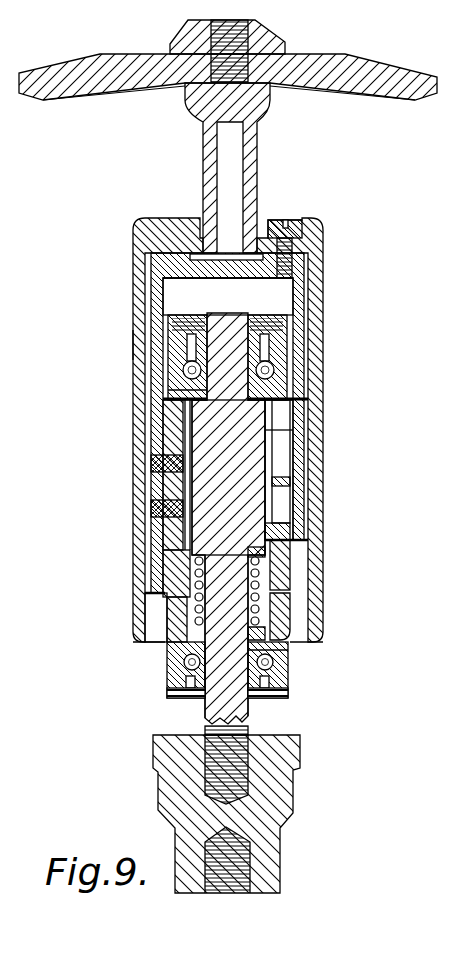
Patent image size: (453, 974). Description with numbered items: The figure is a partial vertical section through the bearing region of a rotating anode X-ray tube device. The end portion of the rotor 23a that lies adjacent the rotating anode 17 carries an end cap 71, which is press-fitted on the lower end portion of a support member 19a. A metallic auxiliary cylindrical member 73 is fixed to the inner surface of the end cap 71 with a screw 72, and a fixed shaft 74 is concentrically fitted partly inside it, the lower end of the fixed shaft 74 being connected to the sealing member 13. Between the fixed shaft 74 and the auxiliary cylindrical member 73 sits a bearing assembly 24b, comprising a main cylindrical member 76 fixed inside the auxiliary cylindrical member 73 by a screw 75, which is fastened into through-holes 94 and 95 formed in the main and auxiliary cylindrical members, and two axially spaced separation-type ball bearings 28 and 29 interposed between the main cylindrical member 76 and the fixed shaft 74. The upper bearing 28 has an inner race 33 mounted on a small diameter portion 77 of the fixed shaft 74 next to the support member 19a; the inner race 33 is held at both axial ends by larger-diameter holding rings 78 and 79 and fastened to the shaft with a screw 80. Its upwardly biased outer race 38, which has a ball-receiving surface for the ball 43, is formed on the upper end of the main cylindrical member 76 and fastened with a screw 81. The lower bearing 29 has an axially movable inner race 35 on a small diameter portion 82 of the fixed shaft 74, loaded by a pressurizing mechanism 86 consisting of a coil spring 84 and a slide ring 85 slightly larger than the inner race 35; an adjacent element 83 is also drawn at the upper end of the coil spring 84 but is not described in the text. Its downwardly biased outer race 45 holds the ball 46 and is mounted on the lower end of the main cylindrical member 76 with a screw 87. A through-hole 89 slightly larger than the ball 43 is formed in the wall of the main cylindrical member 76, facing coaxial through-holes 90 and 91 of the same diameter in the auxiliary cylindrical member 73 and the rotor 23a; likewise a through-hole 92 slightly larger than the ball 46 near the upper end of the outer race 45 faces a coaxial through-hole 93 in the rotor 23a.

The rotating anode 17 is at (346, 55).
The support member 19a is at (258, 160).
The end cap 71 is at (163, 227).
The screw 72 is at (292, 226).
The auxiliary cylindrical member 73 is at (293, 291).
The bearing assembly 24b is at (184, 307).
The screw 80 is at (207, 317).
The small diameter portion 77 is at (236, 330).
The fixed shaft 74 is at (254, 500).
The small diameter portion 82 is at (235, 707).
The screw 81 is at (168, 325).
The holding ring 78 is at (286, 330).
The inner race 33 is at (183, 361).
The ball 43 is at (276, 362).
The rotor 23a is at (138, 343).
The separation-type ball bearing 28 is at (305, 381).
The outer race 38 is at (173, 396).
The holding ring 79 is at (185, 428).
The screw 75 is at (160, 461).
The main cylindrical member 76 is at (172, 572).
The through-hole 93 is at (142, 606).
The through-hole 92 is at (168, 620).
The through-hole 89 is at (286, 404).
The through-hole 90 is at (300, 414).
The through-hole 91 is at (300, 418).
The through-hole 94 is at (292, 452).
The through-hole 95 is at (297, 470).
The coil spring 84 is at (272, 590).
The slide ring 85 is at (285, 636).
The spring cap 83 is at (262, 567).
The pressurizing mechanism 86 is at (267, 605).
The screw 87 is at (183, 700).
The inner race 35 is at (286, 690).
The outer race 45 is at (181, 666).
The ball 46 is at (288, 670).
The separation-type ball bearing 29 is at (276, 658).
The sealing member 13 is at (168, 795).